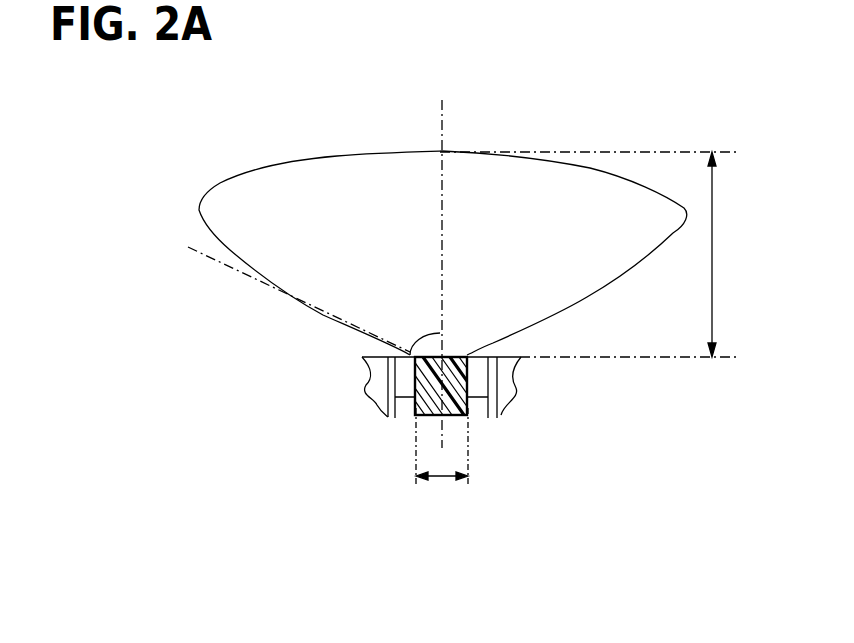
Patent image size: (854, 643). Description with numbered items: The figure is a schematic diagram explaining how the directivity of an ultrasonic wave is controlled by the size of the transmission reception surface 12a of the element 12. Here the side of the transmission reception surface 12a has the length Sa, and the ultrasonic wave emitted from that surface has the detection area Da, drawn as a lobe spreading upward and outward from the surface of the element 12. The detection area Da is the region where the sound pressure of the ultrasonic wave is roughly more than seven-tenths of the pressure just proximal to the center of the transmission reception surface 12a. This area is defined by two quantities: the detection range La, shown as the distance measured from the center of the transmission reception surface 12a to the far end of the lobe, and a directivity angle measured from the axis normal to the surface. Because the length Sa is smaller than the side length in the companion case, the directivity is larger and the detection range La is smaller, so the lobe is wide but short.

The light source (light emitting element) 12 is at (468, 385).
The transmission reception surface 12a is at (463, 355).
The detection area Da is at (288, 172).
The detection range La is at (730, 254).
The length Sa is at (442, 461).